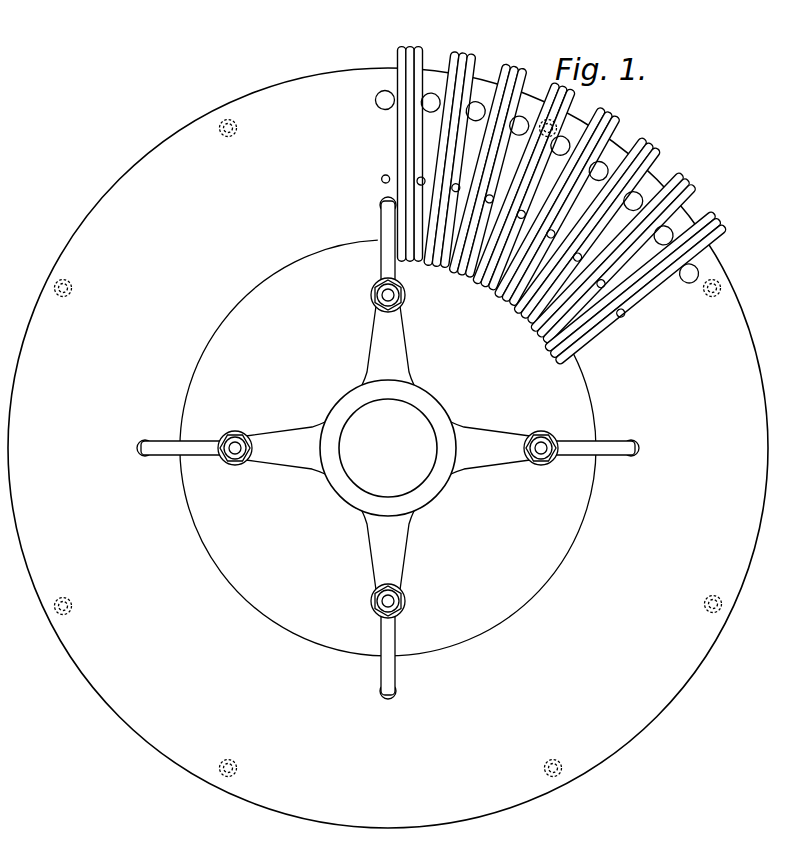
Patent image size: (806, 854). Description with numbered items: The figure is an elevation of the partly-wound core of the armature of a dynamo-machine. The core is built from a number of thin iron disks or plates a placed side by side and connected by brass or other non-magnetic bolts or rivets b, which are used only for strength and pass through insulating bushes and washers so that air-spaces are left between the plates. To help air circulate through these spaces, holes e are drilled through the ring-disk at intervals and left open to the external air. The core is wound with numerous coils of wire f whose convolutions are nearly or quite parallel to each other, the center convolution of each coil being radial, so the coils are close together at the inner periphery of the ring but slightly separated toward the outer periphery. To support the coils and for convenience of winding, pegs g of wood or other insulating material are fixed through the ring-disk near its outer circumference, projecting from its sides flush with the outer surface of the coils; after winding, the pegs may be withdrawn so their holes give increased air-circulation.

The iron disk a is at (743, 325).
The bolt or rivet b is at (637, 447).
The hole e is at (508, 252).
The coil f is at (571, 206).
The peg g is at (538, 198).